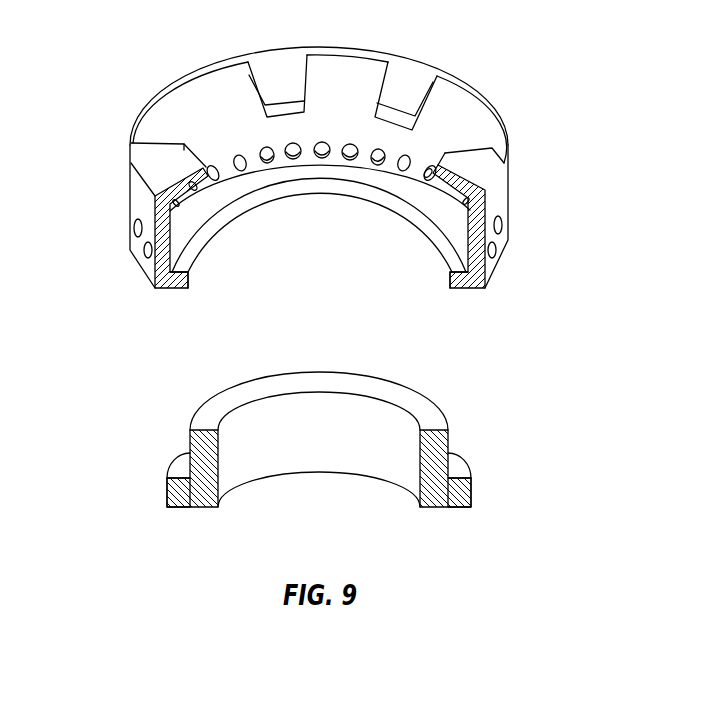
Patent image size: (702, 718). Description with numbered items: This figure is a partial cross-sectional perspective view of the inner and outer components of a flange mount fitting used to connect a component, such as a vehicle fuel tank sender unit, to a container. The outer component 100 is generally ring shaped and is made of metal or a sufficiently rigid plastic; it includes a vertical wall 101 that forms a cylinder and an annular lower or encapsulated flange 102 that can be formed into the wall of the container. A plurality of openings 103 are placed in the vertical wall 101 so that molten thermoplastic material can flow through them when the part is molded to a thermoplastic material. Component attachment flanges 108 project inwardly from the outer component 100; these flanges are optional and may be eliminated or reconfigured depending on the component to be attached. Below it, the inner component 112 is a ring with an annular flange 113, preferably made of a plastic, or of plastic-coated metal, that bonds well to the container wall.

The outer component 100 is at (337, 186).
The vertical wall 101 is at (228, 170).
The encapsulated flange 102 is at (472, 287).
The openings 103 is at (148, 252).
The component attachment flanges 108 is at (412, 82).
The inner component 112 is at (367, 459).
The annular flange 113 is at (470, 507).